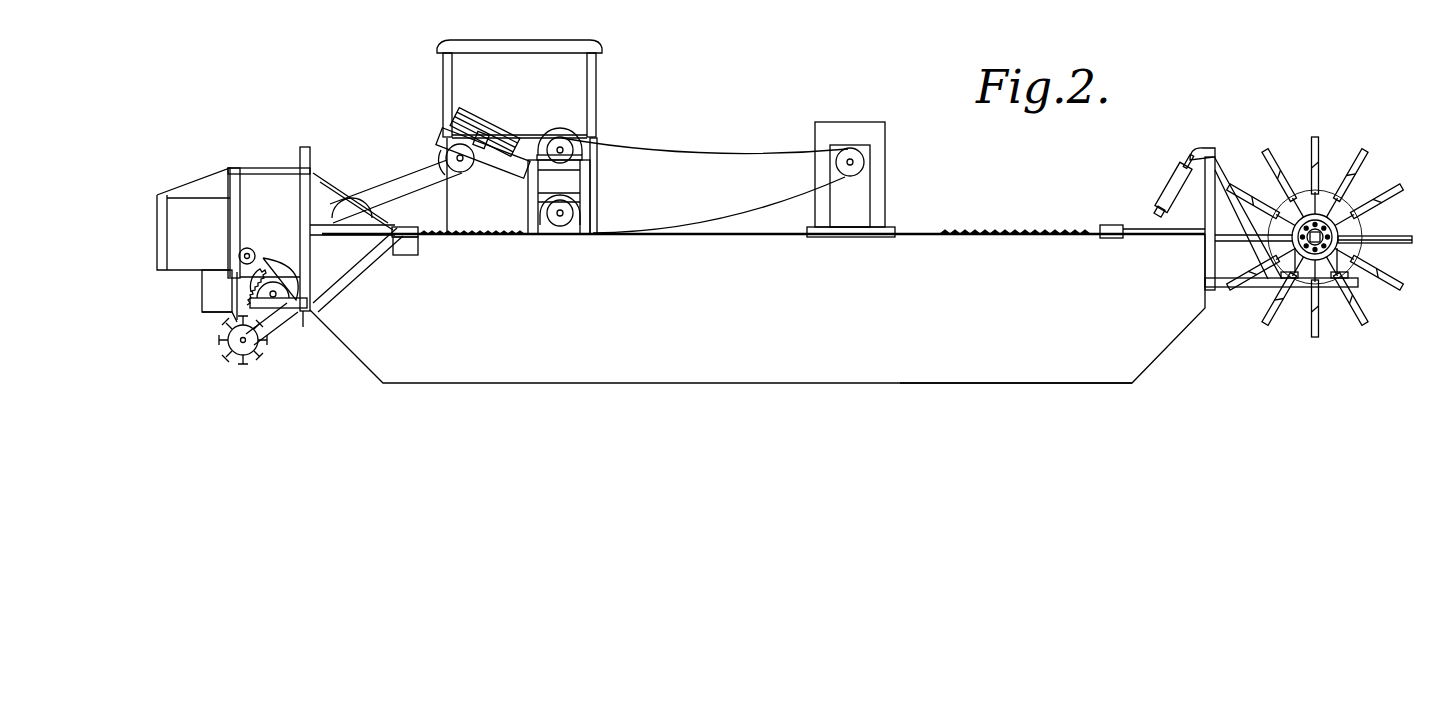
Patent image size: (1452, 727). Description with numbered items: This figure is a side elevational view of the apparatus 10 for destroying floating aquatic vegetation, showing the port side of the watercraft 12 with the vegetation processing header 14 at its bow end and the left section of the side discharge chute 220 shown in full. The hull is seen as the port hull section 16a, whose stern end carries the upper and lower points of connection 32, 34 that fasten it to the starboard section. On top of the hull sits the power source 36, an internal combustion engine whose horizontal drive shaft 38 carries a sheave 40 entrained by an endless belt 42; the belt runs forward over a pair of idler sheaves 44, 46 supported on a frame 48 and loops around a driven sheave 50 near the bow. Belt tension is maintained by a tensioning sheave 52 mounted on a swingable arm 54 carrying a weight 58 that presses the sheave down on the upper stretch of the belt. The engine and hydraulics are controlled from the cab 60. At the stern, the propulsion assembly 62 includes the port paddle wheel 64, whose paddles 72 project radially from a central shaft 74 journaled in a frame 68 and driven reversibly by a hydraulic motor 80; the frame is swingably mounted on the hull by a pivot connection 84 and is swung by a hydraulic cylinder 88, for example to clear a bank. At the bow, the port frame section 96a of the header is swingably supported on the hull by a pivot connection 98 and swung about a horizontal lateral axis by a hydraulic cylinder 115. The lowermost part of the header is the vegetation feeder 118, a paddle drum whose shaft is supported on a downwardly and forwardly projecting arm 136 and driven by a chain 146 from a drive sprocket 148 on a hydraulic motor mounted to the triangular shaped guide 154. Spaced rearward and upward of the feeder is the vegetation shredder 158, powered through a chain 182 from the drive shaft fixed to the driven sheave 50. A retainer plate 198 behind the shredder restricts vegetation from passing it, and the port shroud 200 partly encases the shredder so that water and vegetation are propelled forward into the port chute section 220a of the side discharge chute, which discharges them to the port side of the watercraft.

The apparatus 10 is at (722, 395).
The watercraft 12 is at (1180, 348).
The vegetation processing header 14 is at (300, 255).
The port hull section 16a is at (963, 319).
The upper point of connection 32 is at (1013, 233).
The lower point of connection 34 is at (1050, 385).
The power source 36 is at (852, 123).
The drive shaft 38 is at (855, 162).
The sheave 40 is at (838, 160).
The endless belt 42 is at (698, 153).
The idler sheave 44 is at (580, 150).
The idler sheave 46 is at (575, 225).
The frame 48 is at (592, 232).
The driven sheave 50 is at (352, 204).
The tensioning sheave 52 is at (446, 157).
The arm 54 is at (443, 135).
The weight 58 is at (475, 118).
The cab 60 is at (595, 62).
The propulsion assembly 62 is at (1251, 225).
The port paddle wheel 64 is at (1383, 235).
The frame 68 is at (1213, 150).
The paddle 72 is at (1398, 206).
The central shaft 74 is at (1319, 252).
The hydraulic motor 80 is at (1320, 225).
The pivot connection 84 is at (1115, 238).
The hydraulic cylinder 88 is at (1167, 192).
The port frame section 96a is at (343, 280).
The pivot connection 98 is at (403, 238).
The hydraulic cylinder 115 is at (340, 198).
The vegetation feeder 118 is at (252, 355).
The arm 136 is at (240, 343).
The chain 146 is at (232, 317).
The drive sprocket 148 is at (247, 247).
The triangular shaped guide 154 is at (207, 289).
The vegetation shredder 158 is at (283, 322).
The chain 182 is at (333, 262).
The retainer plate 198 is at (307, 323).
The port shroud 200 is at (275, 258).
The side discharge chute 220 is at (190, 209).
The port chute section 220a is at (226, 240).